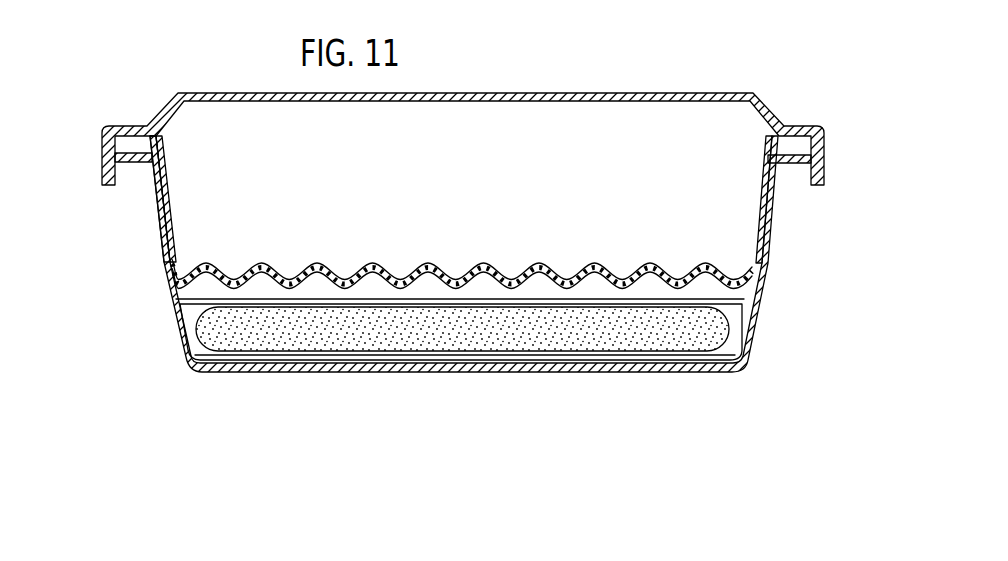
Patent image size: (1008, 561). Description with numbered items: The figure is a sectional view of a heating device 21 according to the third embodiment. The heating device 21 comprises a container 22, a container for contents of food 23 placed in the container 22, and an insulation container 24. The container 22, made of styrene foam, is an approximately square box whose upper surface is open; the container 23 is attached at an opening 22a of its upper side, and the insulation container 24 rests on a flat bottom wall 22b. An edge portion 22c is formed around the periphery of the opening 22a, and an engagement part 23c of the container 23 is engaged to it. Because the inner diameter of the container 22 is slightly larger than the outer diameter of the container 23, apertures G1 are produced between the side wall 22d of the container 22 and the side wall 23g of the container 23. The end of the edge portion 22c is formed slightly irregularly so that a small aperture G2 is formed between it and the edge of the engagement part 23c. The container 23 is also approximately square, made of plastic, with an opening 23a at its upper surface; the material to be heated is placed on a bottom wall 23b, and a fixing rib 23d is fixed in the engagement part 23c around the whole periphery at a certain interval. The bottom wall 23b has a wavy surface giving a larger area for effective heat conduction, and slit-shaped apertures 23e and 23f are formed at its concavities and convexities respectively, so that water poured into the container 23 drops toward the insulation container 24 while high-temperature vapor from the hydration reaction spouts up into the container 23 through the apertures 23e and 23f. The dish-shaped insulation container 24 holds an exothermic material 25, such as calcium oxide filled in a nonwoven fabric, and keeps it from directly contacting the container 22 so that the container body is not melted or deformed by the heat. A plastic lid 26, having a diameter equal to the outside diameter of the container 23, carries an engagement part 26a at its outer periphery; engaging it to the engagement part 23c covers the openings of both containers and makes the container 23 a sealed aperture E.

The heating device 21 is at (185, 87).
The container 22 is at (167, 333).
The opening 22a is at (167, 178).
The flat bottom wall 22b is at (318, 347).
The edge portion 22c is at (130, 157).
The side wall 22d is at (163, 293).
The container for contents of food 23 is at (760, 145).
The opening 23a is at (168, 168).
The bottom wall 23b is at (488, 278).
The engagement part 23c is at (788, 128).
The fixing rib 23d is at (128, 165).
The aperture 23e is at (574, 282).
The aperture 23f is at (655, 268).
The side wall 23g is at (170, 233).
The insulation container 24 is at (182, 368).
The exothermic material 25 is at (403, 330).
The lid 26 is at (476, 93).
The engagement part 26a is at (101, 163).
The sealed aperture E is at (563, 128).
The aperture G1 is at (157, 223).
The small aperture G2 is at (825, 140).